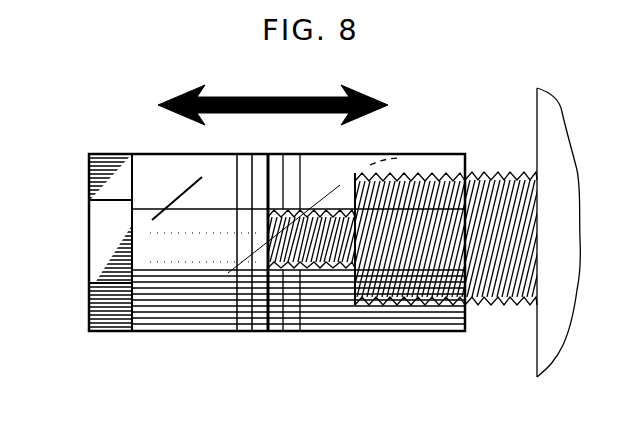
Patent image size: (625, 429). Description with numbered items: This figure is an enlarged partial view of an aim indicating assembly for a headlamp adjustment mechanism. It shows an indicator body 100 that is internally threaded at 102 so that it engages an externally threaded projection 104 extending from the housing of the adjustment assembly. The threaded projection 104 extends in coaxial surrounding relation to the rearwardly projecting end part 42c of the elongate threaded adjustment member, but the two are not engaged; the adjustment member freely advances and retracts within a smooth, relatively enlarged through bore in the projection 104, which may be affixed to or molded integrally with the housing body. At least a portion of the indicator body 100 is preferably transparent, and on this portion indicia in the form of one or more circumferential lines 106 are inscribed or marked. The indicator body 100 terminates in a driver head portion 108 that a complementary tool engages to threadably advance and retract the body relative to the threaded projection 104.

The rearwardly projecting end part of the elongate threaded adjustment member 42c is at (303, 208).
The indicator body 100 is at (197, 335).
The internal threads of the indicator body 102 is at (403, 300).
The externally threaded projection 104 is at (488, 178).
The circumferential lines 106 is at (262, 336).
The driver head portion 108 is at (108, 310).